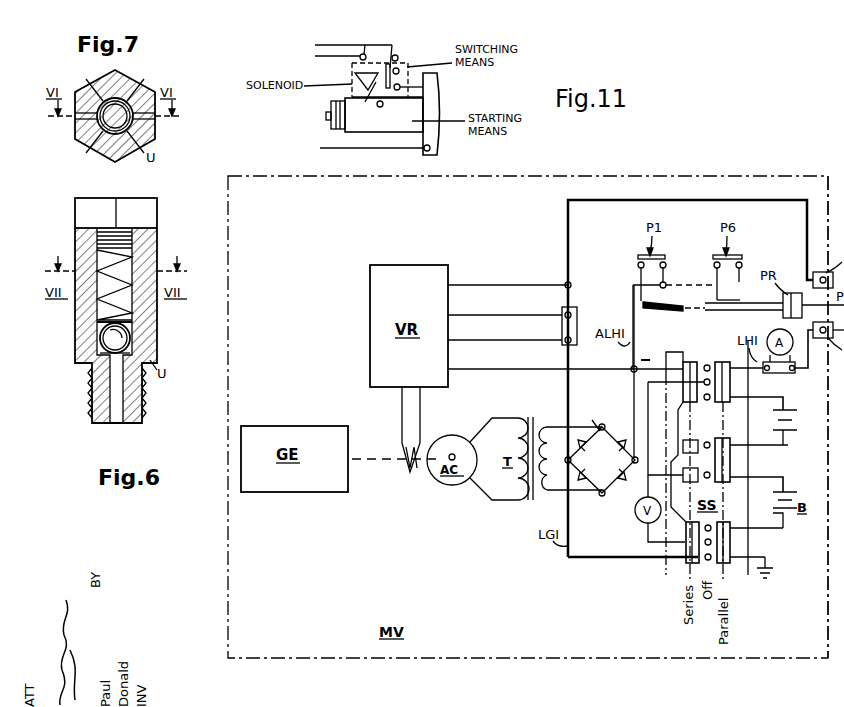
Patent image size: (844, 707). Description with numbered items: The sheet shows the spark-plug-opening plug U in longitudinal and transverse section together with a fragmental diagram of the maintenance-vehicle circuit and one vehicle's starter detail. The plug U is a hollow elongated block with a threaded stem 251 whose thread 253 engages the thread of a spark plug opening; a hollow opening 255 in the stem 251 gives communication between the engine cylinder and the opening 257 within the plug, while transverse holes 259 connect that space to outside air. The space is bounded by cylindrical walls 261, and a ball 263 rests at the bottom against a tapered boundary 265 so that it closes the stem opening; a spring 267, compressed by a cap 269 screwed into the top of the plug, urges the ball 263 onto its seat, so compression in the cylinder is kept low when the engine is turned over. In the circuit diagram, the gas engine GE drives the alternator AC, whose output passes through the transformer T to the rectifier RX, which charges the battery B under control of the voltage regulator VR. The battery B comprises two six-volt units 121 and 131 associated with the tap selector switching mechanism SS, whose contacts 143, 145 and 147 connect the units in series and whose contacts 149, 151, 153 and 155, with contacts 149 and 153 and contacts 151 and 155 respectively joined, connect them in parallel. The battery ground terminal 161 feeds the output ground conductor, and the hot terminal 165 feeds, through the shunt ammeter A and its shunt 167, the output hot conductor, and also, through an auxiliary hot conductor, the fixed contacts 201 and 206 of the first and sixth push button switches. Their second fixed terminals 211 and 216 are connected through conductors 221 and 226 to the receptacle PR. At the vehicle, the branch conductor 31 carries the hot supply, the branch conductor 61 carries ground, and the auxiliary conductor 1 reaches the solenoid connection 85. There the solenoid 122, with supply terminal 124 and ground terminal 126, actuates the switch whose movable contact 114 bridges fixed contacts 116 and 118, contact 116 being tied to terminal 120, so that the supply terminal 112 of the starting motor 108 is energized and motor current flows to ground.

In FIG. 11, the auxiliary conductor 1 is at (315, 56).
In FIG. 11, the branch conductor 31 is at (318, 45).
In FIG. 11, the branch conductor 61 is at (322, 148).
In FIG. 11, the solenoid connection 85 is at (354, 75).
In FIG. 11, the motor 108 is at (402, 127).
In FIG. 11, the supply terminal 112 is at (371, 115).
In FIG. 11, the movable contact 114 is at (392, 45).
In FIG. 11, the fixed contact 116 is at (399, 70).
In FIG. 11, the fixed contact 118 is at (400, 87).
In FIG. 11, the terminal 120 is at (398, 57).
In FIG. 11, the solenoid 122 is at (362, 99).
In FIG. 11, the supply terminal 124 is at (363, 54).
In FIG. 11, the ground terminal 126 is at (380, 107).
In FIG. 11, the battery unit 121 is at (792, 418).
In FIG. 11, the battery unit 131 is at (791, 497).
In FIG. 11, the contact 143 is at (732, 550).
In FIG. 11, the contact 145 is at (732, 470).
In FIG. 11, the contact 147 is at (732, 391).
In FIG. 11, the contact 149 is at (687, 561).
In FIG. 11, the contact 151 is at (608, 451).
In FIG. 11, the contact 153 is at (705, 437).
In FIG. 11, the contact 155 is at (685, 358).
In FIG. 11, the ground terminal 161 is at (732, 575).
In FIG. 11, the hot terminal 165 is at (700, 358).
In FIG. 11, the ammeter shunt 167 is at (791, 374).
In FIG. 11, the fixed contact 201 is at (668, 268).
In FIG. 11, the fixed contact 206 is at (742, 268).
In FIG. 11, the second fixed terminal 211 is at (638, 266).
In FIG. 11, the second fixed terminal 216 is at (714, 266).
In FIG. 11, the conductor 221 is at (713, 314).
In FIG. 11, the conductor 226 is at (722, 296).
In FIG. 6, the threaded stem 251 is at (108, 425).
In FIG. 6, the thread 253 is at (138, 406).
In FIG. 6, the hollow opening 255 is at (98, 402).
In FIG. 7, the opening 257 is at (146, 127).
In FIG. 6, the opening 257 is at (133, 326).
In FIG. 7, the transverse holes 259 is at (97, 148).
In FIG. 6, the transverse holes 259 is at (152, 270).
In FIG. 6, the cylindrical walls 261 is at (100, 308).
In FIG. 7, the ball 263 is at (119, 104).
In FIG. 6, the ball 263 is at (101, 341).
In FIG. 6, the tapered boundary 265 is at (131, 349).
In FIG. 6, the spring 267 is at (96, 264).
In FIG. 6, the cap 269 is at (148, 211).